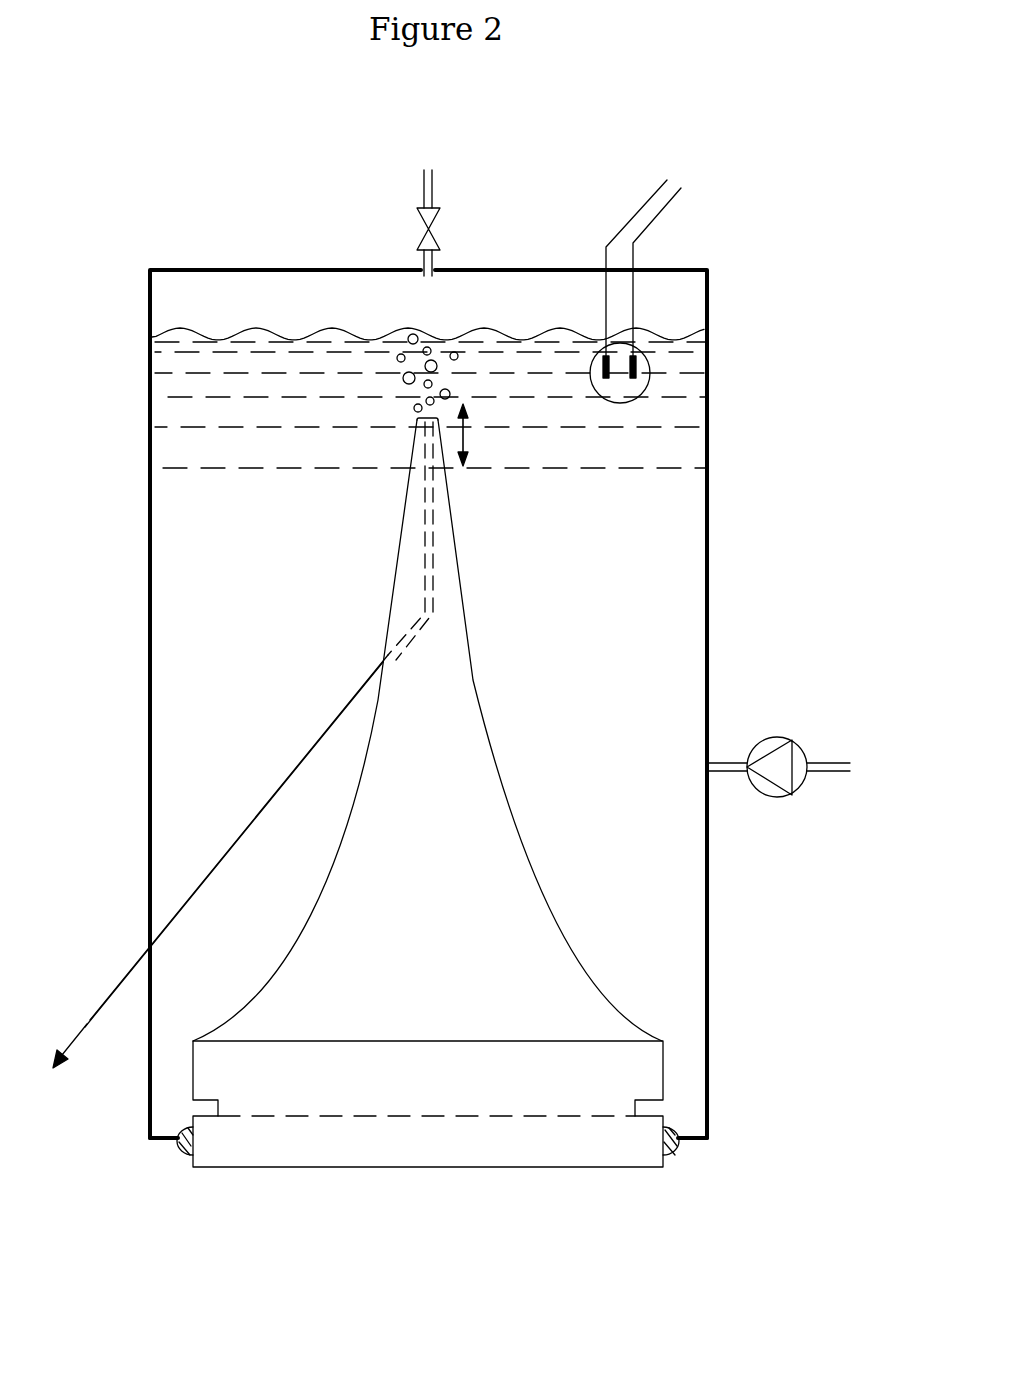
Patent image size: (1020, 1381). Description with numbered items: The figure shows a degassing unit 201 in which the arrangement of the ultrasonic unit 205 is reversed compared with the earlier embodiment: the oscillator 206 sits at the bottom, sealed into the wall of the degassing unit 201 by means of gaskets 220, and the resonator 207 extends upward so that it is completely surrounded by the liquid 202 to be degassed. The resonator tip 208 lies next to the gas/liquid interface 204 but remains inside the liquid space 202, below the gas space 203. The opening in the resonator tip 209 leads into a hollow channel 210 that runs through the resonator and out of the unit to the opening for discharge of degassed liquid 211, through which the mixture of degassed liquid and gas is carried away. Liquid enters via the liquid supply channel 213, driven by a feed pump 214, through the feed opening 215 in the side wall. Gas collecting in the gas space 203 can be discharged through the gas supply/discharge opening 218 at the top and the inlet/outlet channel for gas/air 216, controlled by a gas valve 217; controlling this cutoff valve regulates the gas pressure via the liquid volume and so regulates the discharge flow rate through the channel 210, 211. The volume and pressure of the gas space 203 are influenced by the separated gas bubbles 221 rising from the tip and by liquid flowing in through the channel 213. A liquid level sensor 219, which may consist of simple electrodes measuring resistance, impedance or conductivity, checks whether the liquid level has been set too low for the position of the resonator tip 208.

The degassing unit 201 is at (712, 212).
The liquid to be degassed 202 is at (642, 467).
The gas space 203 is at (675, 293).
The gas/liquid interface 204 is at (254, 322).
The ultrasonic unit 205 is at (531, 718).
The oscillator 206 is at (521, 1165).
The resonator 207 is at (542, 876).
The resonator tip 208 is at (409, 426).
The opening in the resonator tip 209 is at (430, 420).
The hollow channel 210 is at (427, 555).
The opening for discharge of degassed liquid 211 is at (89, 1017).
The liquid supply channel 213 is at (832, 758).
The feed pump 214 is at (780, 797).
The feed opening 215 is at (702, 767).
The inlet/outlet channel for gas/air 216 is at (421, 182).
The gas valve 217 is at (433, 223).
The gas supply/discharge opening 218 is at (427, 276).
The liquid level sensor 219 is at (647, 380).
The housing gasket 220 is at (681, 1155).
The separated gas bubbles 221 is at (403, 378).